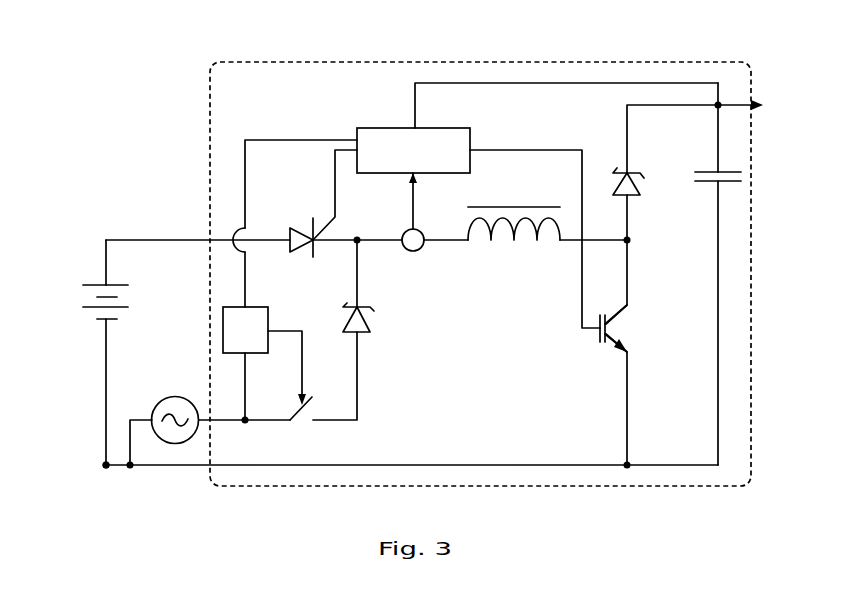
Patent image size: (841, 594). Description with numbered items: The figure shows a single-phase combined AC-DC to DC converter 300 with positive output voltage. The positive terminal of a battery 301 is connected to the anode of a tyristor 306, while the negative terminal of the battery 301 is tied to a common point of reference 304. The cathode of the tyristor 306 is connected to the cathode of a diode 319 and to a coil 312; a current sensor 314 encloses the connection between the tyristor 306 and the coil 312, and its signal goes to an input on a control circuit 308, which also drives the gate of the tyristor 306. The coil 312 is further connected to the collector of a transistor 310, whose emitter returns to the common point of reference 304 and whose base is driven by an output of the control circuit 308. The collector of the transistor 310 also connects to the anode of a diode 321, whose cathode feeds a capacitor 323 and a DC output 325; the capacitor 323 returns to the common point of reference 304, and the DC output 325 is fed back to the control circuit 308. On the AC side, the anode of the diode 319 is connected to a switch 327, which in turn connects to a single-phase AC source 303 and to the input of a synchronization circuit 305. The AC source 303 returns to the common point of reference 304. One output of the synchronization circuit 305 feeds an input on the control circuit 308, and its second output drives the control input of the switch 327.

The single-phase combined AC-DC to DC converter 300 is at (358, 62).
The battery 301 is at (83, 285).
The single-phase AC source 303 is at (163, 403).
The common point of reference 304 is at (106, 465).
The synchronization circuit 305 is at (258, 305).
The tyristor 306 is at (294, 226).
The control circuit 308 is at (403, 128).
The transistor 310 is at (614, 342).
The coil 312 is at (513, 240).
The current sensor 314 is at (411, 252).
The diode 319 is at (368, 322).
The diode 321 is at (633, 172).
The capacitor 323 is at (740, 181).
The DC output 325 is at (763, 100).
The switch 327 is at (299, 404).